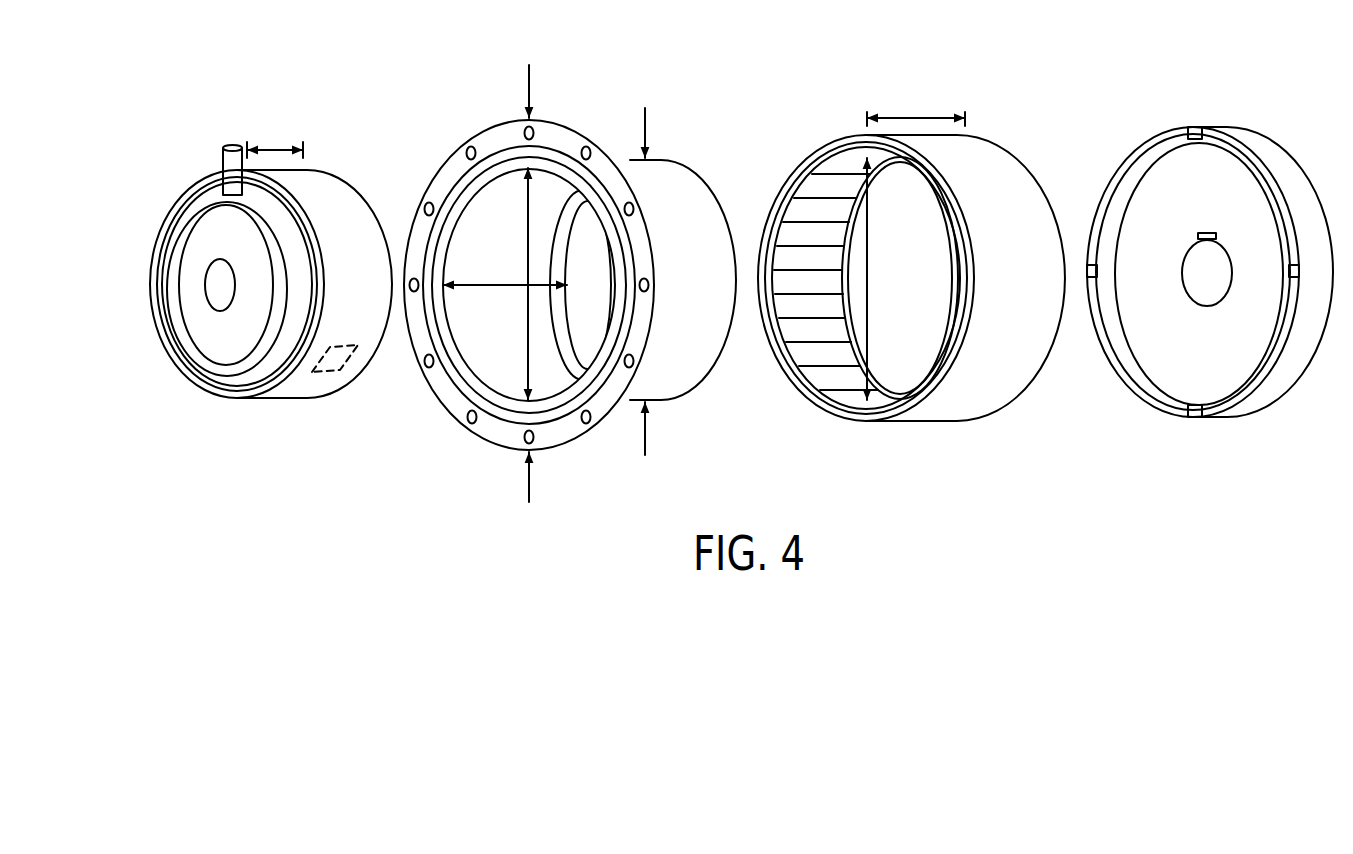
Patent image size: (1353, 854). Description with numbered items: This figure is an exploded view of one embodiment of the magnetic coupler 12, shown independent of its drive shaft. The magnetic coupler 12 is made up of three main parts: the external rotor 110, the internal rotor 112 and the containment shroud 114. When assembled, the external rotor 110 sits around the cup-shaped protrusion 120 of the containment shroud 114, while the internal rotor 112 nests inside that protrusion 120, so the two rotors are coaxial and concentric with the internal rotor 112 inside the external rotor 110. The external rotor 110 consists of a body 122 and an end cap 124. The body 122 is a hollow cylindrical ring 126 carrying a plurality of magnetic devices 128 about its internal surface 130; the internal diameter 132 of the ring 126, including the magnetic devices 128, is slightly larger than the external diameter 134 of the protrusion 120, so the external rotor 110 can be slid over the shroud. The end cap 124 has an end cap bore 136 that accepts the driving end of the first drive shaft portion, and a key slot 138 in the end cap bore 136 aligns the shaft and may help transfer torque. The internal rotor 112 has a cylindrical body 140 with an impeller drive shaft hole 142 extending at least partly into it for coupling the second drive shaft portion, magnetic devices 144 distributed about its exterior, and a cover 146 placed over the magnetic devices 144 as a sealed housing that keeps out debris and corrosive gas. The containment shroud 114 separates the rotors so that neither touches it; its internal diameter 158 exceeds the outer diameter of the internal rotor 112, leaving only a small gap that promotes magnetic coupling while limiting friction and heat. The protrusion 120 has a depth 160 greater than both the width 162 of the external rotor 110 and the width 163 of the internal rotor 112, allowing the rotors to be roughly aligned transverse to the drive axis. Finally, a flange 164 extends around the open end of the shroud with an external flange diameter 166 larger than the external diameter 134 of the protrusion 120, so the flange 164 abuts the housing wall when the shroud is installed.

The magnetic coupler 12 is at (944, 52).
The external rotor 110 is at (1040, 130).
The internal rotor 112 is at (268, 116).
The containment shroud 114 is at (557, 107).
The protrusion 120 is at (659, 158).
The body 122 is at (918, 444).
The end cap 124 is at (1210, 311).
The ring 126 is at (848, 137).
The magnetic devices 128 is at (818, 355).
The internal surface 130 is at (842, 279).
The internal diameter 132 is at (867, 298).
The external diameter 134 is at (646, 121).
The end cap bore 136 is at (1208, 306).
The key slot 138 is at (1207, 232).
The body 140 is at (257, 299).
The impeller drive shaft hole 142 is at (205, 290).
The magnetic devices 144 is at (333, 373).
The cover 146 is at (312, 183).
The internal diameter 158 is at (526, 322).
The depth 160 is at (508, 282).
The width 162 is at (916, 116).
The width 163 is at (275, 141).
The flange 164 is at (548, 452).
The external flange diameter 166 is at (529, 476).